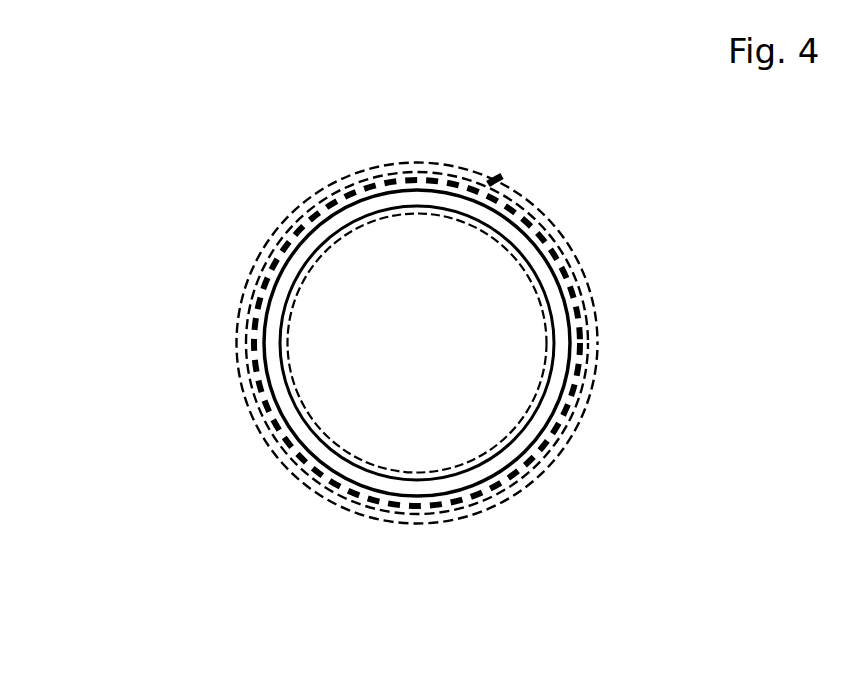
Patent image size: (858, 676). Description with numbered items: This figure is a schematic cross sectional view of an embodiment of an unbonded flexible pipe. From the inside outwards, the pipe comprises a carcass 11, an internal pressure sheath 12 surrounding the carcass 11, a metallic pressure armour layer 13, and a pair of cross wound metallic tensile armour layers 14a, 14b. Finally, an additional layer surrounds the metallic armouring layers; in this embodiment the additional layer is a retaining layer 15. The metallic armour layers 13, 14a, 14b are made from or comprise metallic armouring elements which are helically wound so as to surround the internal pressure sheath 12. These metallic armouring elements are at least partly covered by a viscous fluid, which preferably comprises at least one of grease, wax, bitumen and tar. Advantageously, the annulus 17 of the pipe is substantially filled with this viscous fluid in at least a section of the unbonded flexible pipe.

The carcass 11 is at (324, 257).
The internal pressure sheath 12 is at (563, 383).
The metallic pressure armour layer 13 is at (531, 443).
The cross wound metallic tensile armour layer 14a is at (548, 451).
The cross wound metallic tensile armour layer 14b is at (546, 460).
The retaining layer 15 is at (273, 232).
The annulus 17 is at (506, 184).